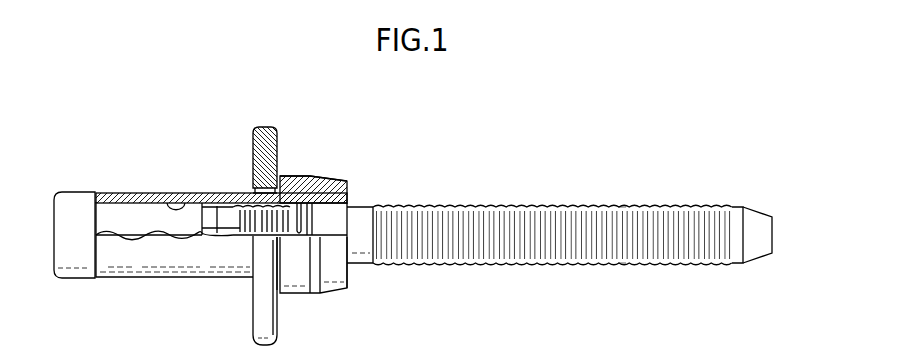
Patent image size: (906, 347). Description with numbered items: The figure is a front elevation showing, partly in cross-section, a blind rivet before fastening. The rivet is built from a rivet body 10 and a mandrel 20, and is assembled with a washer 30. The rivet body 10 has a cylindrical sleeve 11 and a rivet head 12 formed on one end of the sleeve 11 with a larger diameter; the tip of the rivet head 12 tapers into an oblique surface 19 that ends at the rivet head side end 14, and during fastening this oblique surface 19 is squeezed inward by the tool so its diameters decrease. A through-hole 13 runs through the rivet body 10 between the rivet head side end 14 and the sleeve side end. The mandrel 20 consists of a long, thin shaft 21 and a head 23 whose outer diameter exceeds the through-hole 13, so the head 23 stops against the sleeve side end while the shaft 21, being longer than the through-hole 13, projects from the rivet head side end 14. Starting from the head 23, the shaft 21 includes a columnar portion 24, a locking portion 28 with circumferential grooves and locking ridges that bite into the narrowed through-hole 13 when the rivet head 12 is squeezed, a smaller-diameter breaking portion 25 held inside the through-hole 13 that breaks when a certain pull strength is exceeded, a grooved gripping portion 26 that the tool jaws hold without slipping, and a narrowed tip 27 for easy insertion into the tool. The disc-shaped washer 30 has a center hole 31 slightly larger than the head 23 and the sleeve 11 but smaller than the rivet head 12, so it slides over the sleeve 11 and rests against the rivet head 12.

The rivet body 10 is at (206, 172).
The sleeve 11 is at (137, 193).
The rivet head 12 is at (291, 176).
The through-hole 13 is at (174, 210).
The rivet head side end 14 is at (349, 198).
The oblique surface 19 is at (338, 177).
The mandrel 20 is at (522, 198).
The shaft 21 is at (448, 203).
The head 23 is at (73, 192).
The columnar portion 24 is at (113, 222).
The breaking portion 25 is at (302, 212).
The gripping portion 26 is at (620, 207).
The tip 27 is at (755, 213).
The locking portion 28 is at (246, 236).
The washer 30 is at (265, 132).
The center hole 31 is at (246, 193).